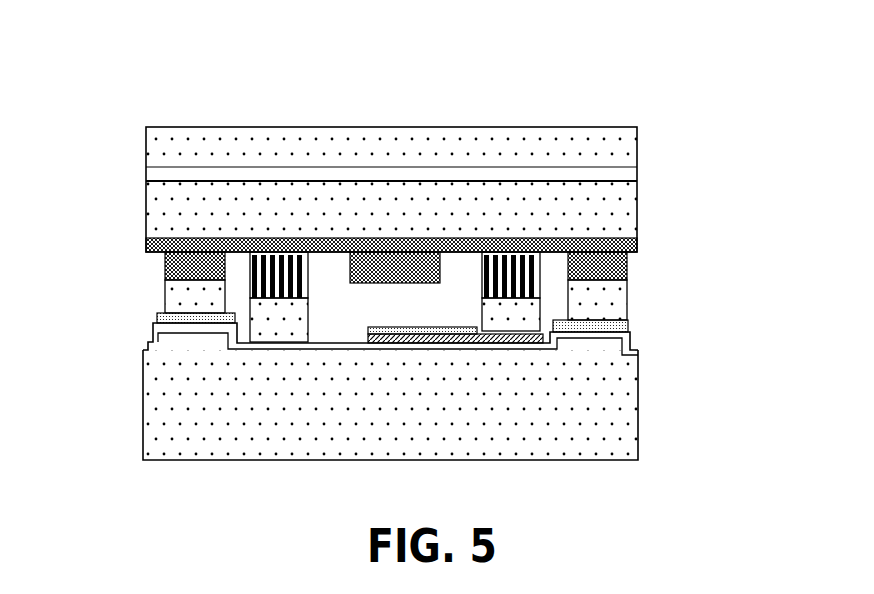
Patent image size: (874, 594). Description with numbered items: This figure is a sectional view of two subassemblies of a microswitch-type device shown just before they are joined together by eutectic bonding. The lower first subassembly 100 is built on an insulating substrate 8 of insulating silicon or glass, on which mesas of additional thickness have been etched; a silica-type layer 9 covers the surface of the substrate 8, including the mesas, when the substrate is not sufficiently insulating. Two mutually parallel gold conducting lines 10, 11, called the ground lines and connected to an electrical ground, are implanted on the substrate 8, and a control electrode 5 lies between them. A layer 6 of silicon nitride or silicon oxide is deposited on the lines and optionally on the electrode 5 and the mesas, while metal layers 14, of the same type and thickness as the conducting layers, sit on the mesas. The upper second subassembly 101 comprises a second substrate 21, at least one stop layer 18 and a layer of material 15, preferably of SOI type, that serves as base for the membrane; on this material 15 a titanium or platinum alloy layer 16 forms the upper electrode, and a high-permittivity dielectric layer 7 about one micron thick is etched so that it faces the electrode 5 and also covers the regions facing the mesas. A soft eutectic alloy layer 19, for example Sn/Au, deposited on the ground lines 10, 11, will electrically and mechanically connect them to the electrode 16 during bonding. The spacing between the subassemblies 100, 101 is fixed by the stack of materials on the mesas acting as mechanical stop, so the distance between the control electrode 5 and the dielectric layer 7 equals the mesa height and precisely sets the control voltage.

The control electrode 5 is at (415, 334).
The insulating layer 6 is at (628, 319).
The dielectric layer 7 is at (428, 257).
The insulating substrate 8 is at (628, 425).
The insulating material layer 9 is at (637, 340).
The conducting line 10 is at (520, 336).
The conducting line 11 is at (240, 328).
The metal layer 14 is at (198, 302).
The membrane base material layer 15 is at (613, 208).
The upper electrode layer 16 is at (633, 250).
The stop layer 18 is at (157, 173).
The eutectic alloy layer 19 is at (250, 273).
The second substrate 21 is at (158, 147).
The first subassembly 100 is at (426, 370).
The second subassembly 101 is at (415, 188).